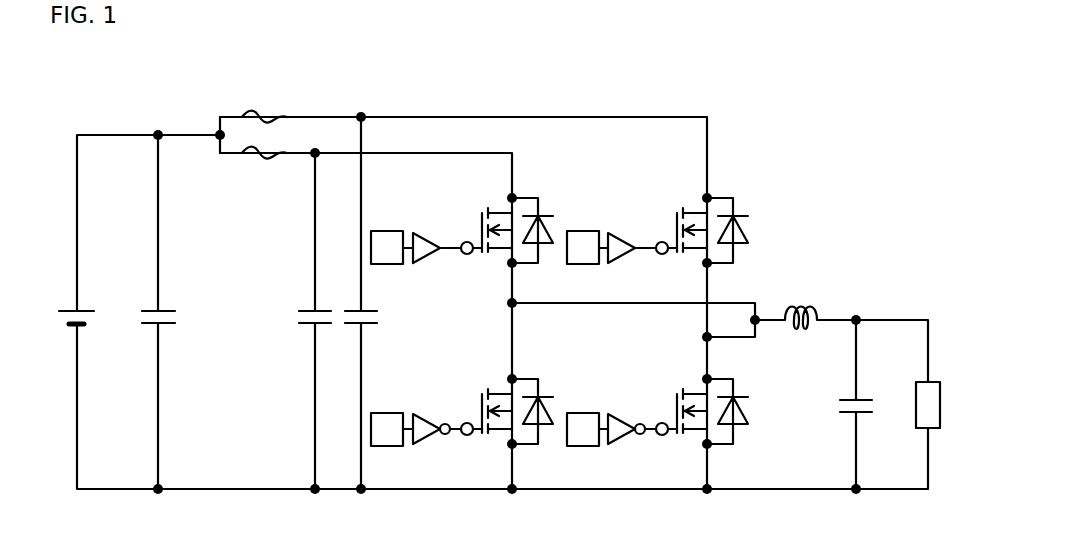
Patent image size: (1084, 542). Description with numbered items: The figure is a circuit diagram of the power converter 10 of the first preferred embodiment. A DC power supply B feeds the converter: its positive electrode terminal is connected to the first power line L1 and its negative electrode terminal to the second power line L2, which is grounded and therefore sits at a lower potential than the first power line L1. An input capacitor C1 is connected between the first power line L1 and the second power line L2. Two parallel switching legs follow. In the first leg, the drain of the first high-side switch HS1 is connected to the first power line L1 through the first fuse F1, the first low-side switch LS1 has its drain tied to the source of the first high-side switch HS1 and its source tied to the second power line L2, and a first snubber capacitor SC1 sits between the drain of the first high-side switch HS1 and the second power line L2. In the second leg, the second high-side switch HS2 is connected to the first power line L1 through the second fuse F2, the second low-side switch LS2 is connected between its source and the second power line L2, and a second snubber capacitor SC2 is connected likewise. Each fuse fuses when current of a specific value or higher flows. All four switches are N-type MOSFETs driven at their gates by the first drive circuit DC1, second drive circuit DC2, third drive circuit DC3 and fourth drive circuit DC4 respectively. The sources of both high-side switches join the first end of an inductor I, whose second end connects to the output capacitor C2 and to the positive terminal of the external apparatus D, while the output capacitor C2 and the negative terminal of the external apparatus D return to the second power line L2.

The power converter 10 is at (818, 144).
The DC power supply B is at (73, 310).
The first power line L1 is at (203, 132).
The second power line L2 is at (242, 489).
The first fuse F1 is at (262, 157).
The second fuse F2 is at (262, 112).
The input capacitor C1 is at (160, 310).
The first snubber capacitor SC1 is at (310, 325).
The second snubber capacitor SC2 is at (368, 325).
The first high-side switch HS1 is at (536, 181).
The second high-side switch HS2 is at (731, 181).
The first low-side switch LS1 is at (536, 364).
The second low-side switch LS2 is at (754, 387).
The first drive circuit DC1 is at (387, 231).
The second drive circuit DC2 is at (387, 413).
The third drive circuit DC3 is at (583, 231).
The fourth drive circuit DC4 is at (583, 413).
The inductor I is at (803, 305).
The output capacitor C2 is at (845, 412).
The external apparatus D is at (930, 430).